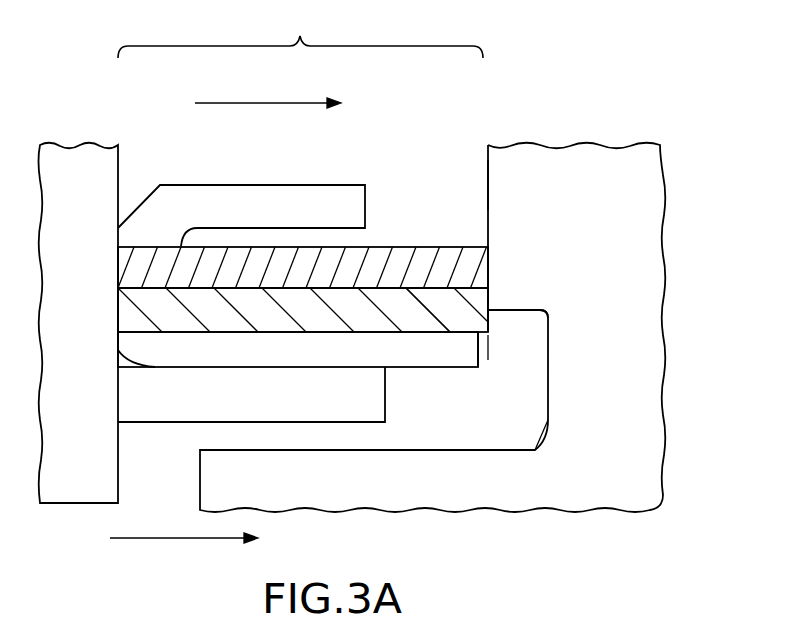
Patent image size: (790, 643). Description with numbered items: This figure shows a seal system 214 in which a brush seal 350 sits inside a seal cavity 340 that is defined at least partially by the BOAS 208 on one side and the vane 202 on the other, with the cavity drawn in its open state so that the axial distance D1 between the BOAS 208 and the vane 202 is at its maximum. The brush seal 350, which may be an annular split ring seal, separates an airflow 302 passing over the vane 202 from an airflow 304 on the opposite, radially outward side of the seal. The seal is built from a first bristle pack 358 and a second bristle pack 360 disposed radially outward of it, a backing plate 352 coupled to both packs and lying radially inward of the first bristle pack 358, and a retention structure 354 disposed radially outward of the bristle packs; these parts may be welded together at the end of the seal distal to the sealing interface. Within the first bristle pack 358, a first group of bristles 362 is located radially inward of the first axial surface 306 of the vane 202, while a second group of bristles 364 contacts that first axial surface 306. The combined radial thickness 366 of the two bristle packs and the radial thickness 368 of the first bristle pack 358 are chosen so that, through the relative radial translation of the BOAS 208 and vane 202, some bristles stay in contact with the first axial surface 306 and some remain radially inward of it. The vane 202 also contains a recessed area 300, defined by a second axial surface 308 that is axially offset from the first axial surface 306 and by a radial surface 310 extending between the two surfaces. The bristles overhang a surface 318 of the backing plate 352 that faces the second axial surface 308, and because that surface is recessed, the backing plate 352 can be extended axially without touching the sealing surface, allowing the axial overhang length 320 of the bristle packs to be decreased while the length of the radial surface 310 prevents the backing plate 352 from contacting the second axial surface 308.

The vane 202 is at (599, 207).
The BOAS 208 is at (87, 207).
The seal system 214 is at (86, 88).
The recessed area 300 is at (535, 388).
The airflow 302 is at (162, 538).
The airflow 304 is at (250, 103).
The first axial surface 306 is at (488, 187).
The second axial surface 308 is at (538, 440).
The radial surface 310 is at (536, 311).
The surface of backing plate 318 is at (478, 367).
The axial overhang length 320 is at (432, 348).
The seal cavity 340 is at (413, 135).
The brush seal 350 is at (217, 168).
The backing plate 352 is at (303, 358).
The retention structure 354 is at (289, 215).
The first bristle pack 358 is at (427, 310).
The second bristle pack 360 is at (448, 272).
The first group of bristles 362 is at (492, 311).
The second group of bristles 364 is at (492, 290).
The combined radial thickness 366 is at (87, 332).
The radial thickness 368 is at (117, 330).
The axial distance D1 is at (300, 33).